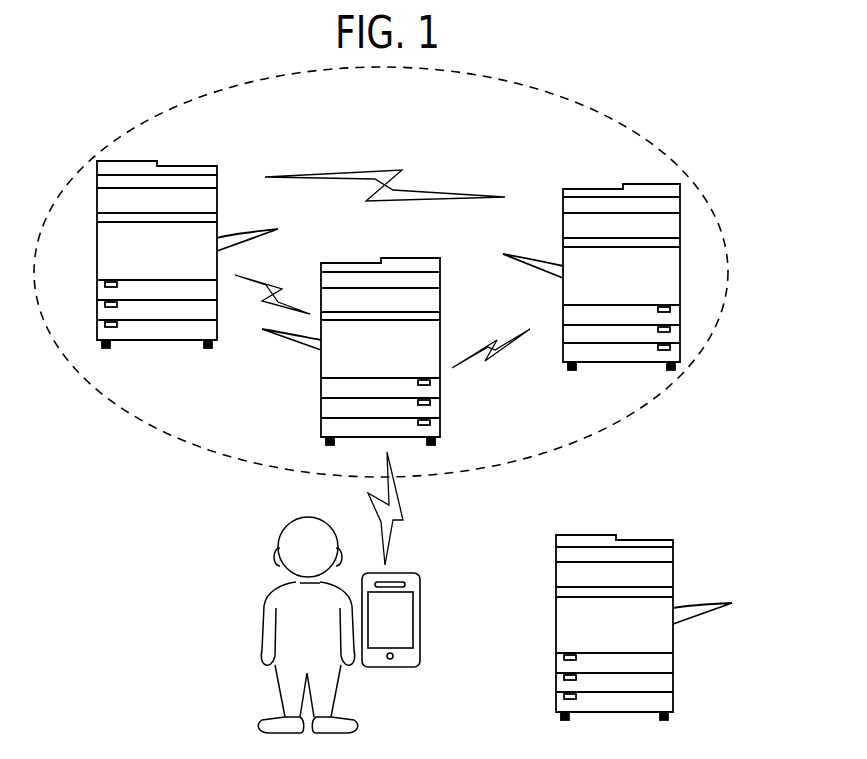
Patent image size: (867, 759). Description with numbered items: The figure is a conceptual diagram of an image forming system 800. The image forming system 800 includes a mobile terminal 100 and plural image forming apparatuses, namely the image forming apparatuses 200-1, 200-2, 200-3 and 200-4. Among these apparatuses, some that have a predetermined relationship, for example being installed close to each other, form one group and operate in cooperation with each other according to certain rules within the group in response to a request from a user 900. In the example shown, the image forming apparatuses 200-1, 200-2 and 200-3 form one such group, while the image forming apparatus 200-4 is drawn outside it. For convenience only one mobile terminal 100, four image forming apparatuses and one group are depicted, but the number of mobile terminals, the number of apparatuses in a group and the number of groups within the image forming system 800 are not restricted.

The image forming system 800 is at (737, 136).
The image forming apparatus 200-1 is at (436, 262).
The image forming apparatus 200-2 is at (237, 137).
The image forming apparatus 200-3 is at (590, 188).
The image forming apparatus 200-4 is at (645, 536).
The mobile terminal 100 is at (380, 668).
The user 900 is at (290, 520).